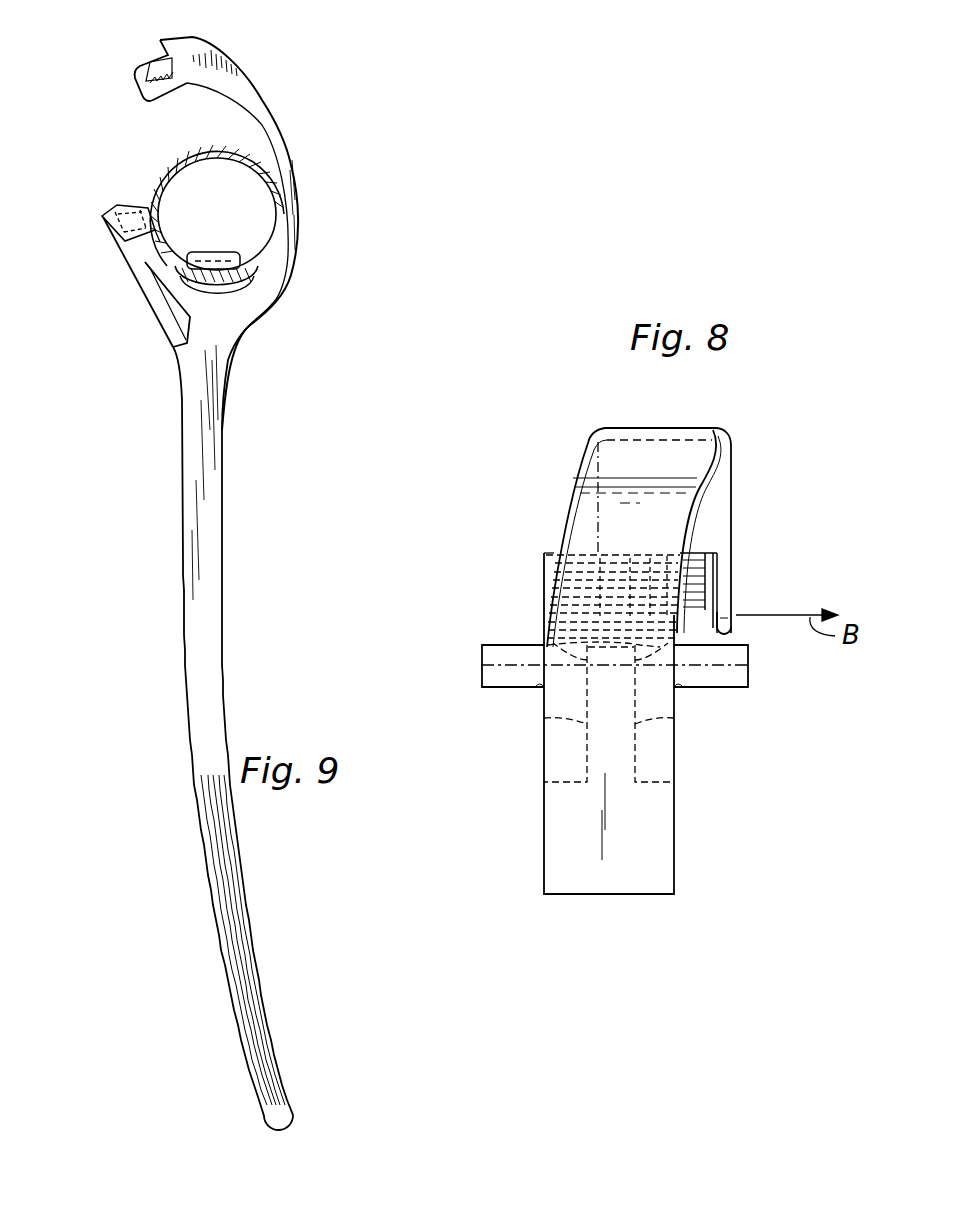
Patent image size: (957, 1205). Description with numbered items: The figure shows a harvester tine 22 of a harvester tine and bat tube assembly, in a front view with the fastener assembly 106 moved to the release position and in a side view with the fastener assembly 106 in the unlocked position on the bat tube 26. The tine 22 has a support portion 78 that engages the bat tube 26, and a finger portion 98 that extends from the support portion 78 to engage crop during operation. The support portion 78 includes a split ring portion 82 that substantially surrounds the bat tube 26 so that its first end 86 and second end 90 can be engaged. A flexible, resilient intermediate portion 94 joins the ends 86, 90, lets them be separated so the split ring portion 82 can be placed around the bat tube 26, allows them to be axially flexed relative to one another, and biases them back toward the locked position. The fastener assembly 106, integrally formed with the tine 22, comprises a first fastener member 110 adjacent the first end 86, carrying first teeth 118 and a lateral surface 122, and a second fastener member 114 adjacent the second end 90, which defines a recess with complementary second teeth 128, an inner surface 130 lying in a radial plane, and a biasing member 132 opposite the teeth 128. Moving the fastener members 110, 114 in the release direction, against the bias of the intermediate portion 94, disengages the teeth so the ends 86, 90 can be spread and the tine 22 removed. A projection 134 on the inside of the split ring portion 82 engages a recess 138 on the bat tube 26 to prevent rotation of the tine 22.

In FIG. 9, the harvester tine 22 is at (222, 437).
In FIG. 8, the harvester tine 22 is at (675, 812).
In FIG. 9, the bat tube 26 is at (233, 158).
In FIG. 9, the support portion 78 is at (303, 218).
In FIG. 8, the support portion 78 is at (594, 448).
In FIG. 9, the split ring portion 82 is at (270, 102).
In FIG. 8, the split ring portion 82 is at (703, 428).
In FIG. 9, the first end 86 is at (205, 48).
In FIG. 8, the first end 86 is at (724, 568).
In FIG. 9, the second end 90 is at (104, 220).
In FIG. 9, the intermediate portion 94 is at (296, 156).
In FIG. 9, the finger portion 98 is at (221, 670).
In FIG. 9, the fastener assembly 106 is at (116, 88).
In FIG. 8, the fastener assembly 106 is at (748, 590).
In FIG. 9, the first fastener member 110 is at (138, 64).
In FIG. 8, the first fastener member 110 is at (708, 538).
In FIG. 9, the second fastener member 114 is at (110, 205).
In FIG. 8, the first teeth 118 is at (693, 602).
In FIG. 8, the lateral surface 122 is at (728, 634).
In FIG. 8, the second teeth 128 is at (553, 612).
In FIG. 8, the inner surface 130 is at (560, 578).
In FIG. 9, the biasing member 132 is at (115, 238).
In FIG. 9, the projection 134 is at (165, 305).
In FIG. 9, the recess 138 is at (232, 255).